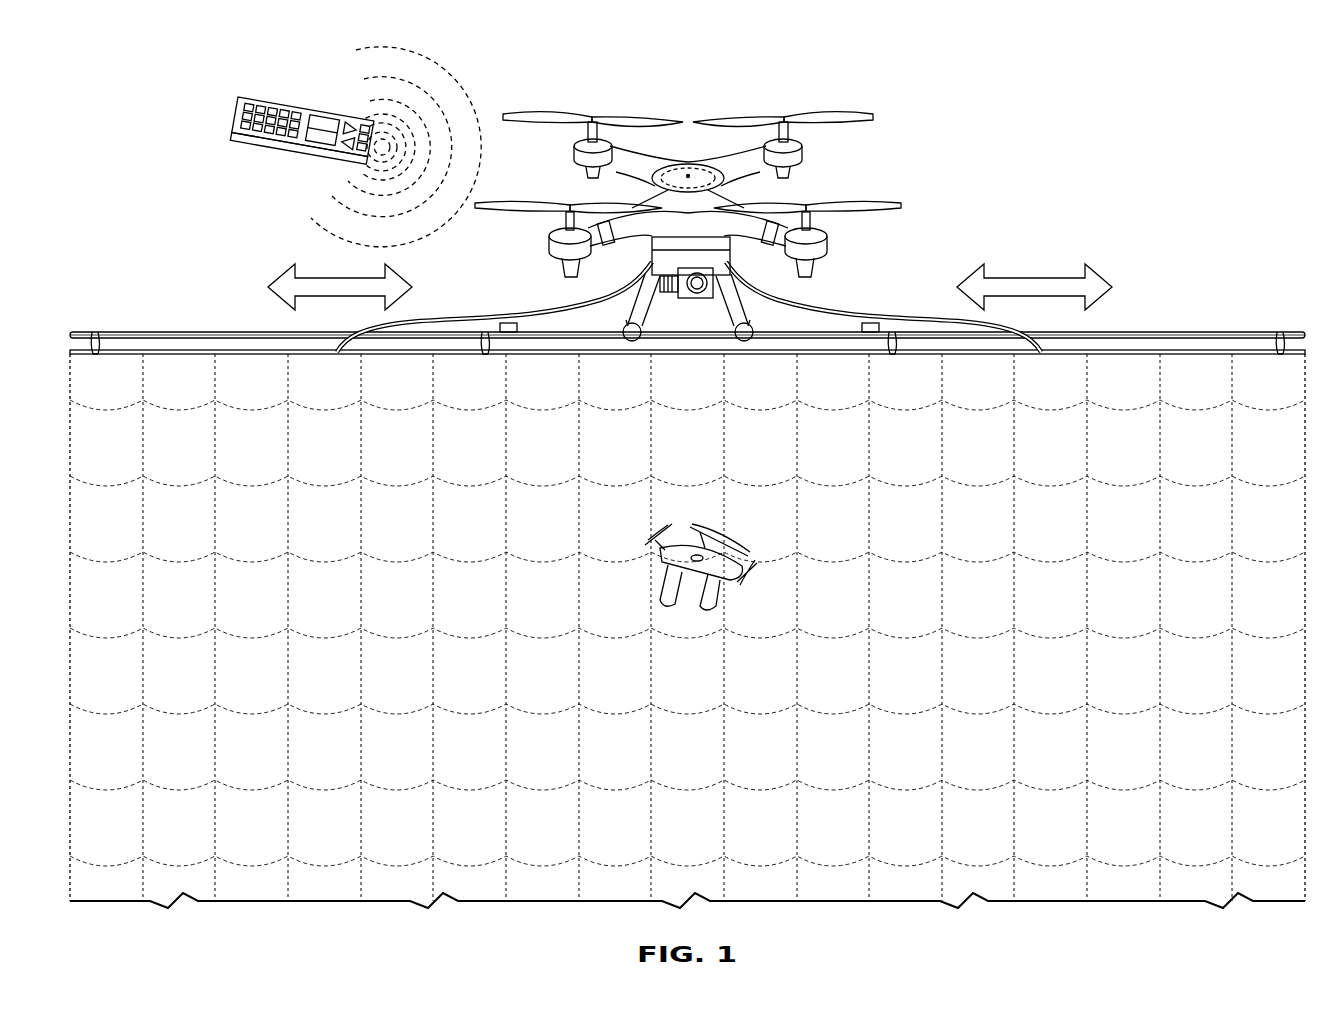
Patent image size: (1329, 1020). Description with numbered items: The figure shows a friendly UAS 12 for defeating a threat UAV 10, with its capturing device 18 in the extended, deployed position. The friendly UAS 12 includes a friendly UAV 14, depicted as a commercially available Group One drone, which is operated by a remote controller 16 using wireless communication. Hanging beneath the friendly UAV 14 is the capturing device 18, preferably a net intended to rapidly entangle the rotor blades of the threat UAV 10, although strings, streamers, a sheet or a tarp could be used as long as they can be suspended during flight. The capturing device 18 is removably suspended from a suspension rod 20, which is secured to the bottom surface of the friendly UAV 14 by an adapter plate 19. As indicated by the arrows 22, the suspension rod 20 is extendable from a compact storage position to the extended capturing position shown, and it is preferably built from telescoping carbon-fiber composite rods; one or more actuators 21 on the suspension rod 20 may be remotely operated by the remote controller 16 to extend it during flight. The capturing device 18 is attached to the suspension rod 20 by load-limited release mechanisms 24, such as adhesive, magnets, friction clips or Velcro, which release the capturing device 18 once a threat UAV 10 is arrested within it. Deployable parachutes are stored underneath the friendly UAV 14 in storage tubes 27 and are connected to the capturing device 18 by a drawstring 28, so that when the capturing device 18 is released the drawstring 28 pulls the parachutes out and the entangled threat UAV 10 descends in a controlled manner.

The threat UAV 10 is at (752, 568).
The friendly UAS 12 is at (1006, 138).
The friendly UAV 14 is at (858, 113).
The remote controller 16 is at (235, 120).
The capturing device 18 is at (1160, 435).
The adapter plate 19 is at (700, 338).
The suspension rod 20 is at (248, 333).
The actuators 21 is at (502, 323).
The arrows 22 is at (300, 277).
The load-limited release mechanisms 24 is at (95, 333).
The storage tubes 27 is at (630, 318).
The drawstring 28 is at (455, 320).